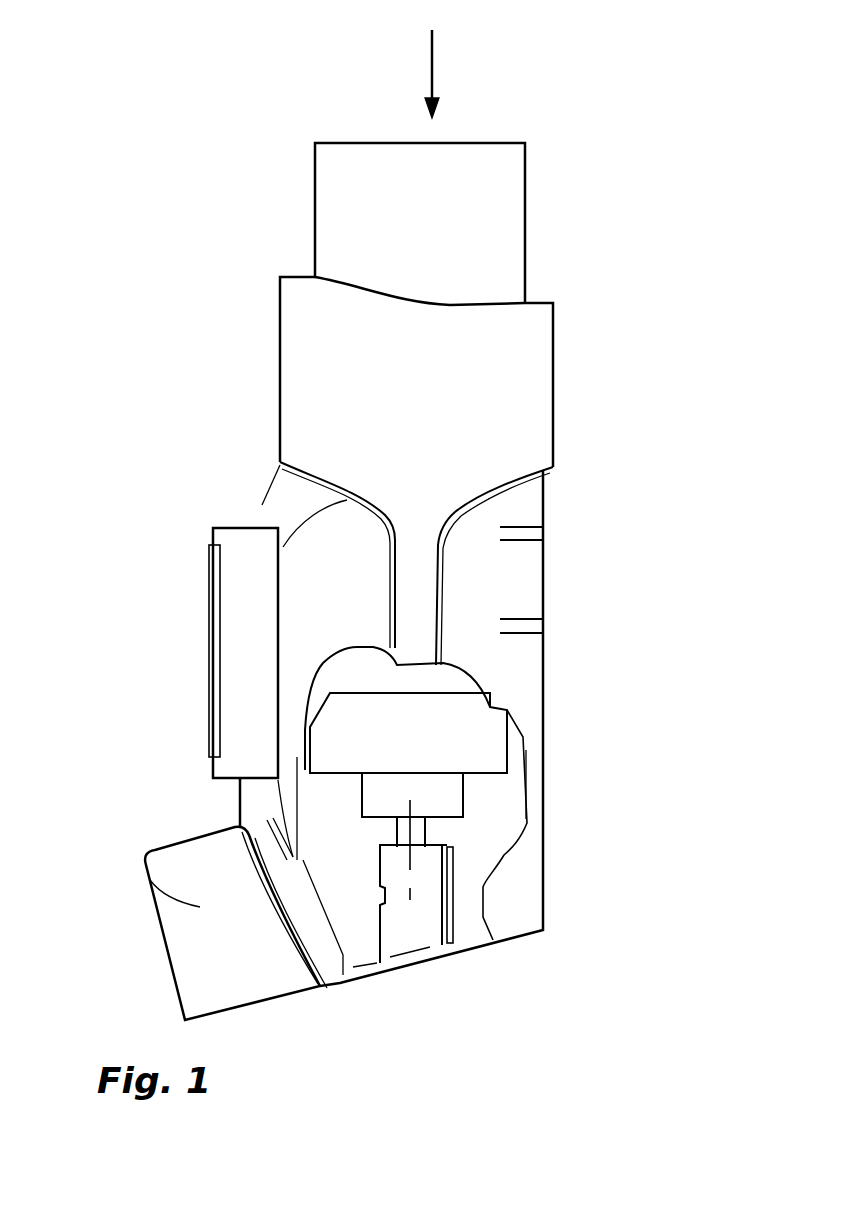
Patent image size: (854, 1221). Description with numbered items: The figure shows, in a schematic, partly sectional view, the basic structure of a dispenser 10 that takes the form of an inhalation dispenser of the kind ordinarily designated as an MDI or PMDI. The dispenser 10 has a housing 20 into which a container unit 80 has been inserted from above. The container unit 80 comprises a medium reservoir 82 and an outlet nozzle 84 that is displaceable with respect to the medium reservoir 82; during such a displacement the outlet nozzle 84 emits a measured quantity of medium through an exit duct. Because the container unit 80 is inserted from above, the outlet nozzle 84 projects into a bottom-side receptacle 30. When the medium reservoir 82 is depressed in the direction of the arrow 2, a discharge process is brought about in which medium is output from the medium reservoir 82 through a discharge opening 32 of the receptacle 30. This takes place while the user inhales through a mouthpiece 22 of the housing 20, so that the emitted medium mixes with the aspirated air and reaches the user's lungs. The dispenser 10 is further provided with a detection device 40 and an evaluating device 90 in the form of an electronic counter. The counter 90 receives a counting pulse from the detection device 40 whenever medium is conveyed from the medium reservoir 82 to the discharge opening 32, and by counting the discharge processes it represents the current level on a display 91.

The arrow 2 is at (432, 67).
The dispenser 10 is at (137, 309).
The housing 20 is at (522, 584).
The mouthpiece 22 is at (197, 907).
The receptacle 30 is at (418, 923).
The discharge opening 32 is at (378, 902).
The detection device 40 is at (462, 900).
The container unit 80 is at (537, 180).
The medium reservoir 82 is at (470, 190).
The outlet nozzle 84 is at (416, 840).
The evaluating device 90 is at (250, 550).
The display 91 is at (212, 625).